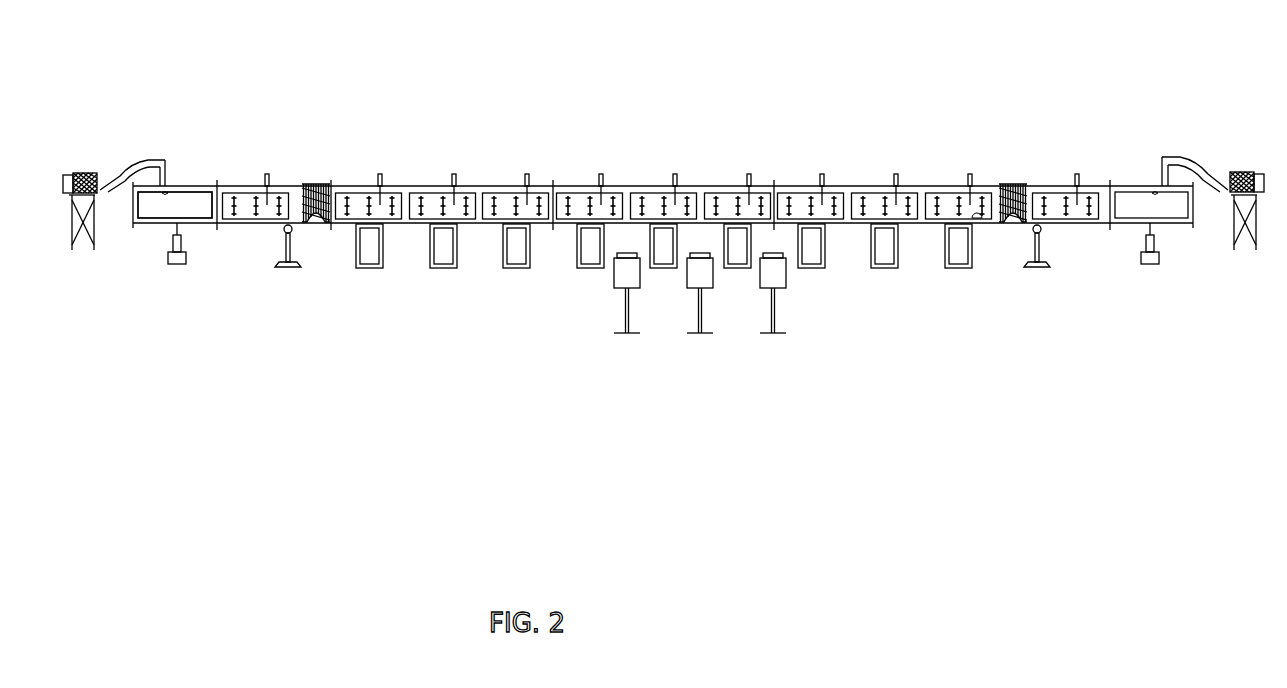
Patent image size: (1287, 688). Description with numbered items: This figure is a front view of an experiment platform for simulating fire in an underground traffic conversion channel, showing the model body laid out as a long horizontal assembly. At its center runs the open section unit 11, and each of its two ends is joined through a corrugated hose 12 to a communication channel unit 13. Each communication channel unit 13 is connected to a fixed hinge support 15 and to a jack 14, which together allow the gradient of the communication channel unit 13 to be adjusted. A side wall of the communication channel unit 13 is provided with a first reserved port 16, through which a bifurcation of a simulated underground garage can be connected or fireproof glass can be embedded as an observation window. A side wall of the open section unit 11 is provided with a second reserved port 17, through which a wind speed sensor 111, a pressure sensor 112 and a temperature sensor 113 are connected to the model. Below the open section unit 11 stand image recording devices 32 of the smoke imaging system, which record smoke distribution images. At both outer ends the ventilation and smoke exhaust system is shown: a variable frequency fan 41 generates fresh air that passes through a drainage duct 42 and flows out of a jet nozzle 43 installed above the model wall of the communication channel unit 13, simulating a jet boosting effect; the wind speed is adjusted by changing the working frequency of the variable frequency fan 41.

The open section unit 11 is at (708, 186).
The corrugated hose 12 is at (322, 183).
The communication channel unit 13 is at (1102, 186).
The jack 14 is at (1158, 243).
The fixed hinge support 15 is at (1047, 248).
The first reserved port 16 is at (1148, 200).
The second reserved port 17 is at (898, 210).
The image recording device 32 is at (615, 273).
The variable frequency fan 41 is at (84, 172).
The drainage duct 42 is at (143, 163).
The jet nozzle 43 is at (183, 183).
The wind speed sensor 111 is at (453, 173).
The pressure sensor 112 is at (527, 173).
The temperature sensor 113 is at (413, 222).